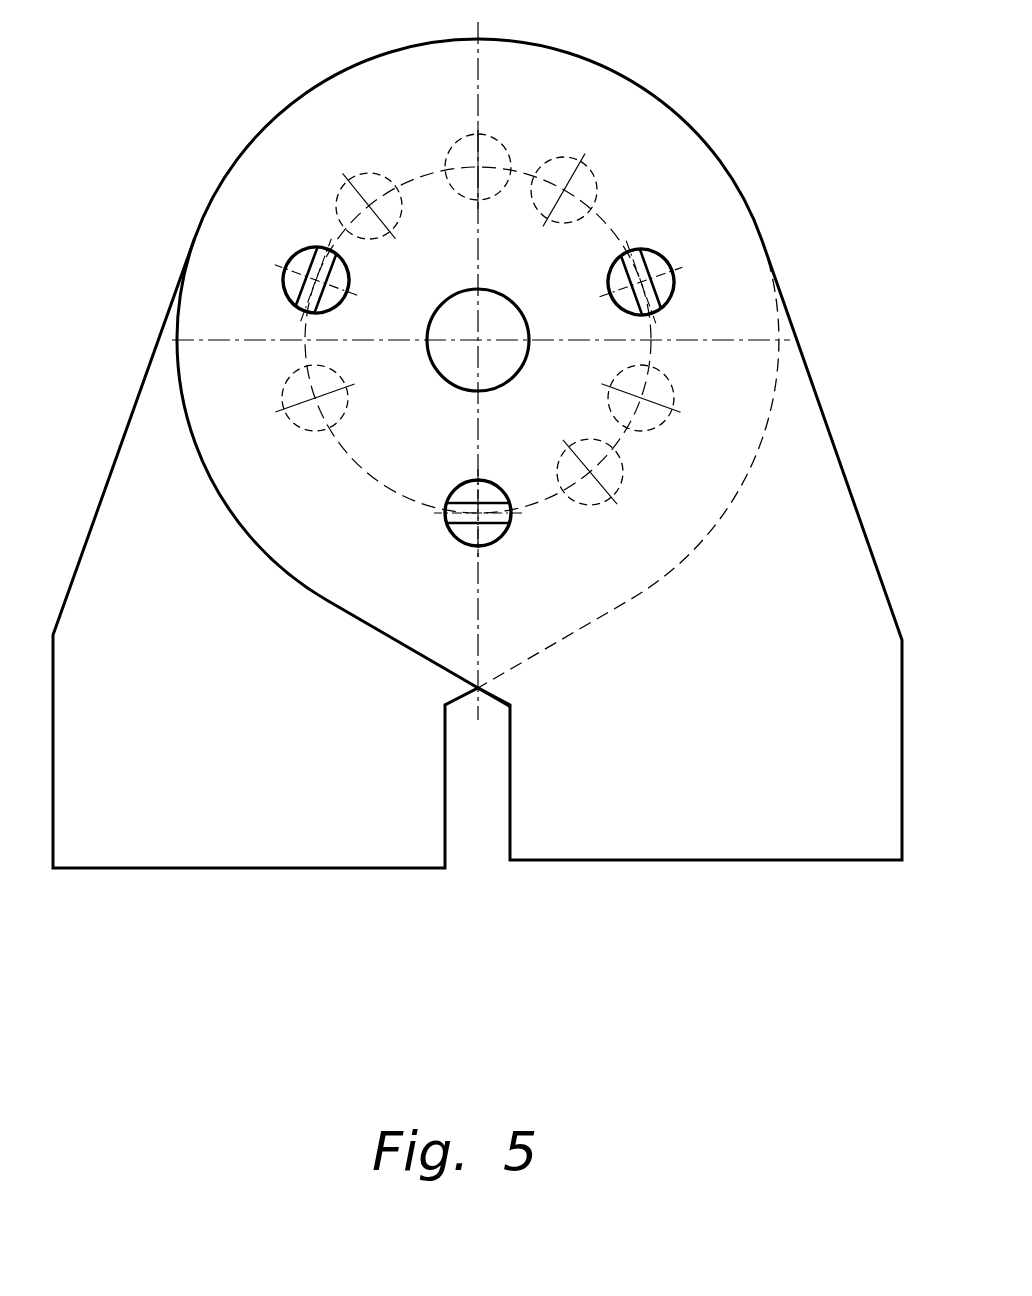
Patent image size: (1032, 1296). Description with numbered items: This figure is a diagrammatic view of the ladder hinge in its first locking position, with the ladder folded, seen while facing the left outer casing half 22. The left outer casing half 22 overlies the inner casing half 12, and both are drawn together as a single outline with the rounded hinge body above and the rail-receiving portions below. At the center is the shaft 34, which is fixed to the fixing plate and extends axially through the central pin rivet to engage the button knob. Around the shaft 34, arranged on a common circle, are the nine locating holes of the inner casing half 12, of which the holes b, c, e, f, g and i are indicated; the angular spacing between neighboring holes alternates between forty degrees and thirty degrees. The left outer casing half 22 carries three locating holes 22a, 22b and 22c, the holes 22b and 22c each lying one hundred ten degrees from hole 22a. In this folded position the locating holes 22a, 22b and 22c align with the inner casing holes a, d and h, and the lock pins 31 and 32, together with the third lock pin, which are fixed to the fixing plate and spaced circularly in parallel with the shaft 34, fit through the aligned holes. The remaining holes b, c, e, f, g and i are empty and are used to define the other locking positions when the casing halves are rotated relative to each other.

The inner casing half 12 is at (302, 835).
The left outer casing half 22 is at (732, 842).
The locating hole 22a is at (498, 542).
The locating hole 22b is at (672, 297).
The locating hole 22c is at (304, 268).
The lock pin 31 is at (470, 498).
The lock pin 32 is at (657, 265).
The shaft 34 is at (507, 313).
The locating hole b is at (617, 478).
The locating hole c is at (672, 389).
The locating hole e is at (597, 182).
The locating hole f is at (503, 143).
The locating hole g is at (369, 173).
The locating hole i is at (305, 428).